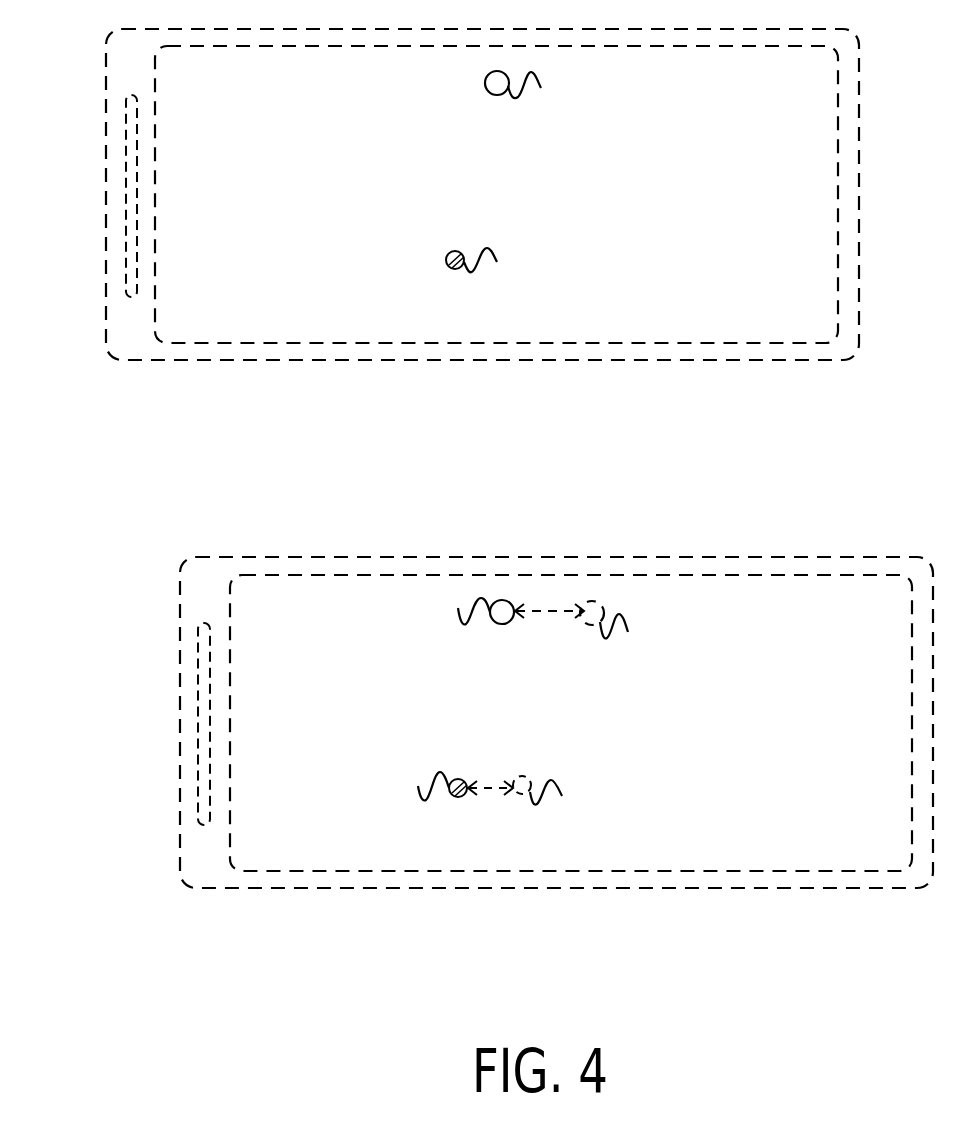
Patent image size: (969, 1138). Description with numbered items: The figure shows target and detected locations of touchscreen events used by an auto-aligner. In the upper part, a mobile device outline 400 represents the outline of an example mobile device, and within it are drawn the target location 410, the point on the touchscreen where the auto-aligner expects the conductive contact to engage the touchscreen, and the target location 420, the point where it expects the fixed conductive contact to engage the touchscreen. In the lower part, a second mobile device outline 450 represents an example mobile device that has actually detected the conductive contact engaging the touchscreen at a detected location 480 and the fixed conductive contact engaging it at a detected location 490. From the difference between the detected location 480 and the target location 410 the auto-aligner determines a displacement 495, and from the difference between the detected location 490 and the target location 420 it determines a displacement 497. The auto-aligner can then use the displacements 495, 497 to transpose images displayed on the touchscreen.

The mobile device outline 400 is at (105, 196).
The target location 410 is at (573, 360).
The target location 420 is at (520, 528).
The mobile device outline 450 is at (180, 622).
The detected location 480 is at (471, 611).
The detected location 490 is at (435, 782).
The displacement 495 is at (539, 580).
The displacement 497 is at (486, 757).